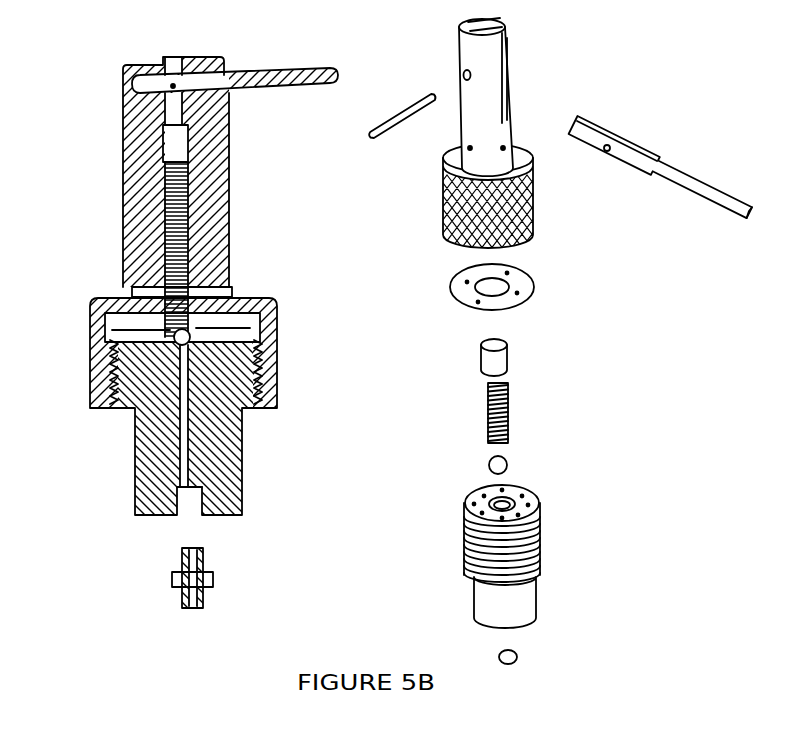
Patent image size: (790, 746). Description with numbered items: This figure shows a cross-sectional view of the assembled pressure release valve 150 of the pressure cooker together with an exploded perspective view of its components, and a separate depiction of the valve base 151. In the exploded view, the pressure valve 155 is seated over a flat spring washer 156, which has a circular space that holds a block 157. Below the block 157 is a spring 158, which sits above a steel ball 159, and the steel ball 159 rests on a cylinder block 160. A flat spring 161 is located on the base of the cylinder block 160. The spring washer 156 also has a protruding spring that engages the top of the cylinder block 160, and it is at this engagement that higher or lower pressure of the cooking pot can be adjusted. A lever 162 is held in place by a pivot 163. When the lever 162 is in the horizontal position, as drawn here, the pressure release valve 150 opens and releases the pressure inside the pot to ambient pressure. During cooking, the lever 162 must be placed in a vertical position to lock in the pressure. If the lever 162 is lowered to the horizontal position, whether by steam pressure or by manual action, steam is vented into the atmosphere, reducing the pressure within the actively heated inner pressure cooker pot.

The pressure release valve 150 is at (125, 192).
The valve base 151 is at (172, 575).
The pressure valve 155 is at (537, 180).
The flat spring washer 156 is at (532, 283).
The block 157 is at (508, 353).
The spring 158 is at (508, 402).
The steel ball 159 is at (508, 460).
The cylinder block 160 is at (542, 542).
The flat spring 161 is at (517, 652).
The lever 162 is at (648, 157).
The pivot 163 is at (421, 93).